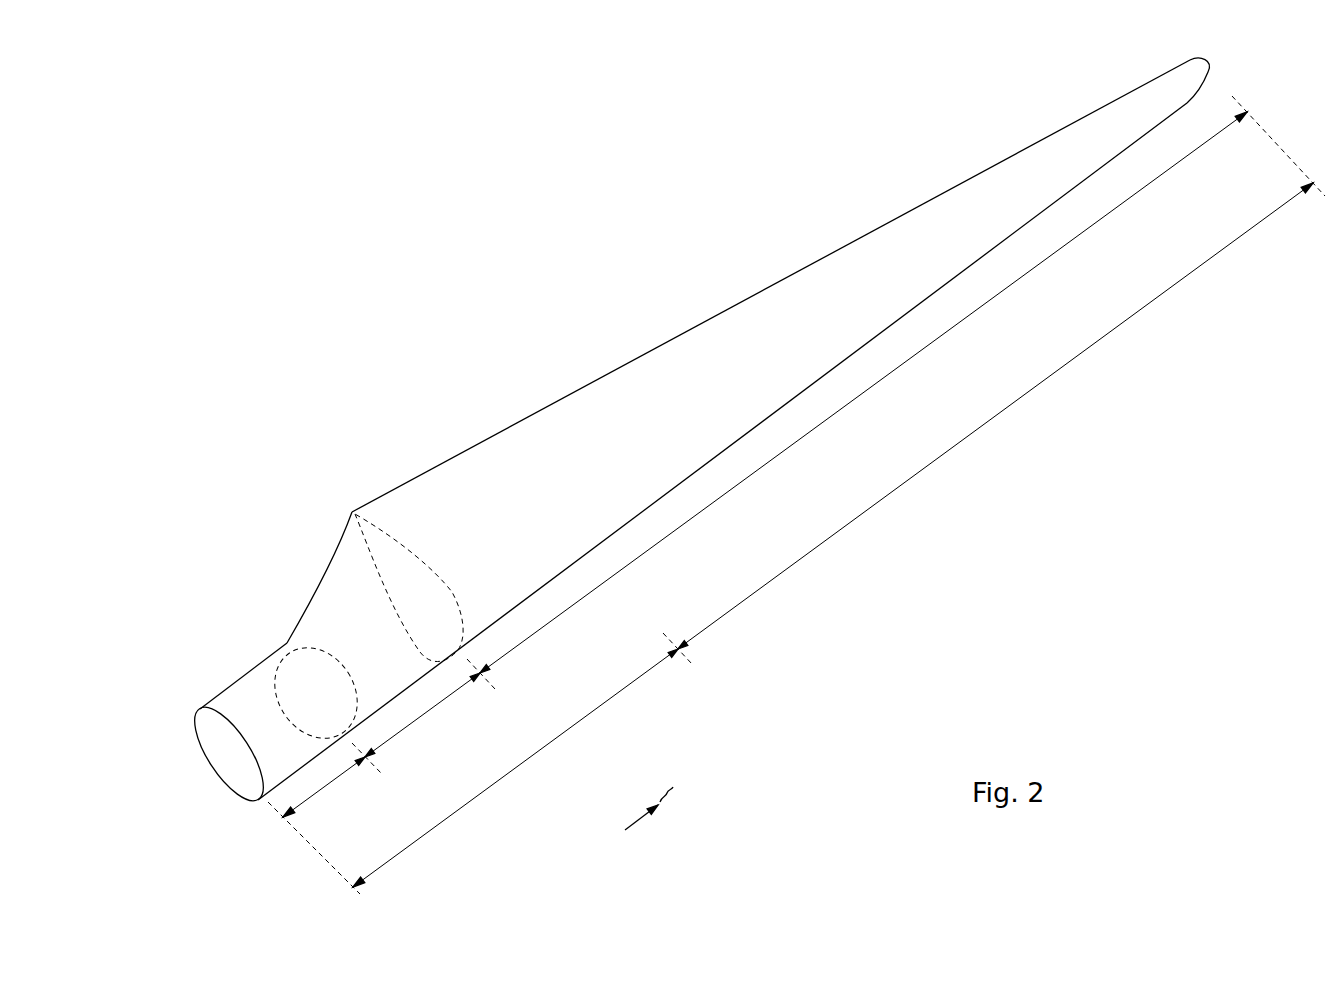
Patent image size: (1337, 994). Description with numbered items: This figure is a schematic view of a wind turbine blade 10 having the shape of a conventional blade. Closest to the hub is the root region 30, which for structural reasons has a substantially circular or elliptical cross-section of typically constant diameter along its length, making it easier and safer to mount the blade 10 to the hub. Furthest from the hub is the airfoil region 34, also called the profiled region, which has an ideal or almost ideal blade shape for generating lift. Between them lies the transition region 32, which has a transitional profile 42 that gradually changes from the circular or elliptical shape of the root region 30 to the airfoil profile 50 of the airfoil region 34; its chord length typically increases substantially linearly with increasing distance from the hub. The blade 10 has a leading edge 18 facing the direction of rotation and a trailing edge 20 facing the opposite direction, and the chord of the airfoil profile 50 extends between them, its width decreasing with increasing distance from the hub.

The wind turbine blade 10 is at (523, 295).
The leading edge 18 is at (900, 319).
The trailing edge 20 is at (907, 212).
The root region 30 is at (330, 783).
The transition region 32 is at (430, 710).
The airfoil region 34 is at (791, 447).
The transitional profile 42 is at (648, 785).
The airfoil profile 50 is at (823, 543).